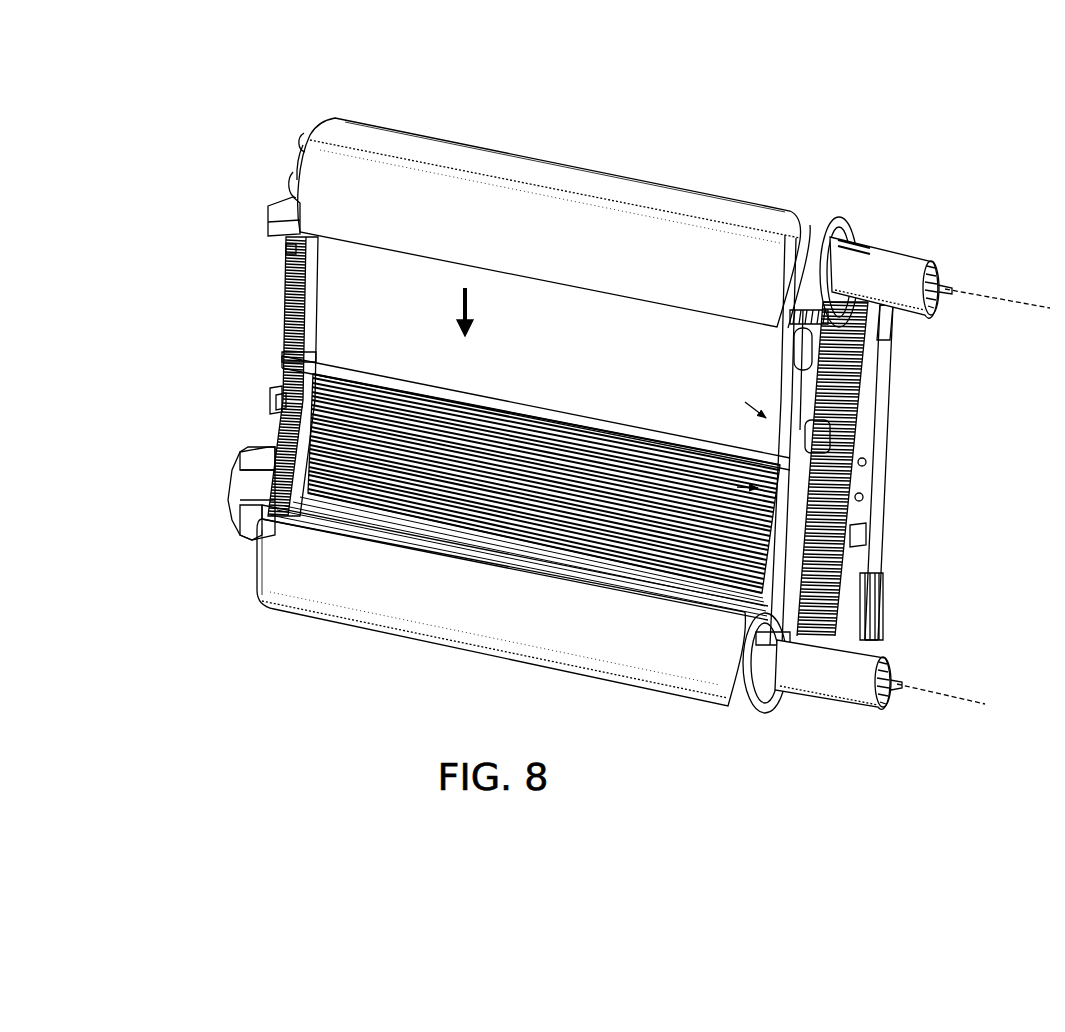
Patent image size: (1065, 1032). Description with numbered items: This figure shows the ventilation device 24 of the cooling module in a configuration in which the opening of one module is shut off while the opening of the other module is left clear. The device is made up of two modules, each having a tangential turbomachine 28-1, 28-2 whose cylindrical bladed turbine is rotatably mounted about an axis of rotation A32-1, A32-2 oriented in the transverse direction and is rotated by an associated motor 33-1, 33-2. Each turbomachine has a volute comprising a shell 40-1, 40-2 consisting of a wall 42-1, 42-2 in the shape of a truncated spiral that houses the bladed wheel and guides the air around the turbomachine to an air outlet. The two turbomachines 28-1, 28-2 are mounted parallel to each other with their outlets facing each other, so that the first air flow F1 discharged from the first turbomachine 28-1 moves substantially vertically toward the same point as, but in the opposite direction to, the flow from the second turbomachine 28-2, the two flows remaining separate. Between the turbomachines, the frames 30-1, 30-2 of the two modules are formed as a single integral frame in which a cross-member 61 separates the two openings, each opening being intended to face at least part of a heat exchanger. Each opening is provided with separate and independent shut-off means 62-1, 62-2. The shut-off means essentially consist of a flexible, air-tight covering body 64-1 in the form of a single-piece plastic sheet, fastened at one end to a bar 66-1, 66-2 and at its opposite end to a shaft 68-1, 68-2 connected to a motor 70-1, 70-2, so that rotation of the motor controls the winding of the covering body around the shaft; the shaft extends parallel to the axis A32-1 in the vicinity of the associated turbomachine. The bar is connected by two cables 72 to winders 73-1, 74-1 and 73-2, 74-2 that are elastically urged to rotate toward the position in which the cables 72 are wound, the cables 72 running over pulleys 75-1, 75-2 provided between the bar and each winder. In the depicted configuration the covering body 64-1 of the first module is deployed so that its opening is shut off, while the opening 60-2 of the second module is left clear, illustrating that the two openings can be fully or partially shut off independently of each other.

The ventilation device 24 is at (288, 122).
The first tangential turbomachine 28-1 is at (706, 158).
The second tangential turbomachine 28-2 is at (648, 705).
The frame of the first module 30-1 is at (524, 218).
The frame of the second module 30-2 is at (412, 598).
The motor 33-1 is at (887, 262).
The motor 33-2 is at (826, 690).
The shell 40-1 is at (467, 155).
The shell 40-2 is at (565, 633).
The wall 42-1 is at (353, 170).
The wall 42-2 is at (325, 590).
The opening 60-2 is at (858, 533).
The cross-member 61 is at (612, 427).
The shut-off means 62-1 is at (258, 300).
The shut-off means 62-2 is at (232, 421).
The covering body 64-1 is at (835, 432).
The bar 66-1 is at (282, 356).
The bar 66-2 is at (262, 495).
The shaft 68-1 is at (893, 340).
The shaft 68-2 is at (756, 640).
The motor 70-1 is at (280, 210).
The motor 70-2 is at (247, 515).
The cables 72 is at (272, 400).
The winder 73-1 is at (288, 250).
The winder 73-2 is at (240, 462).
The winder 74-1 is at (888, 372).
The winder 74-2 is at (884, 596).
The pulley 75-1 is at (866, 462).
The pulley 75-2 is at (863, 497).
The axis of rotation A32-1 is at (1000, 297).
The axis of rotation A32-2 is at (947, 690).
The first air flow F1 is at (478, 318).